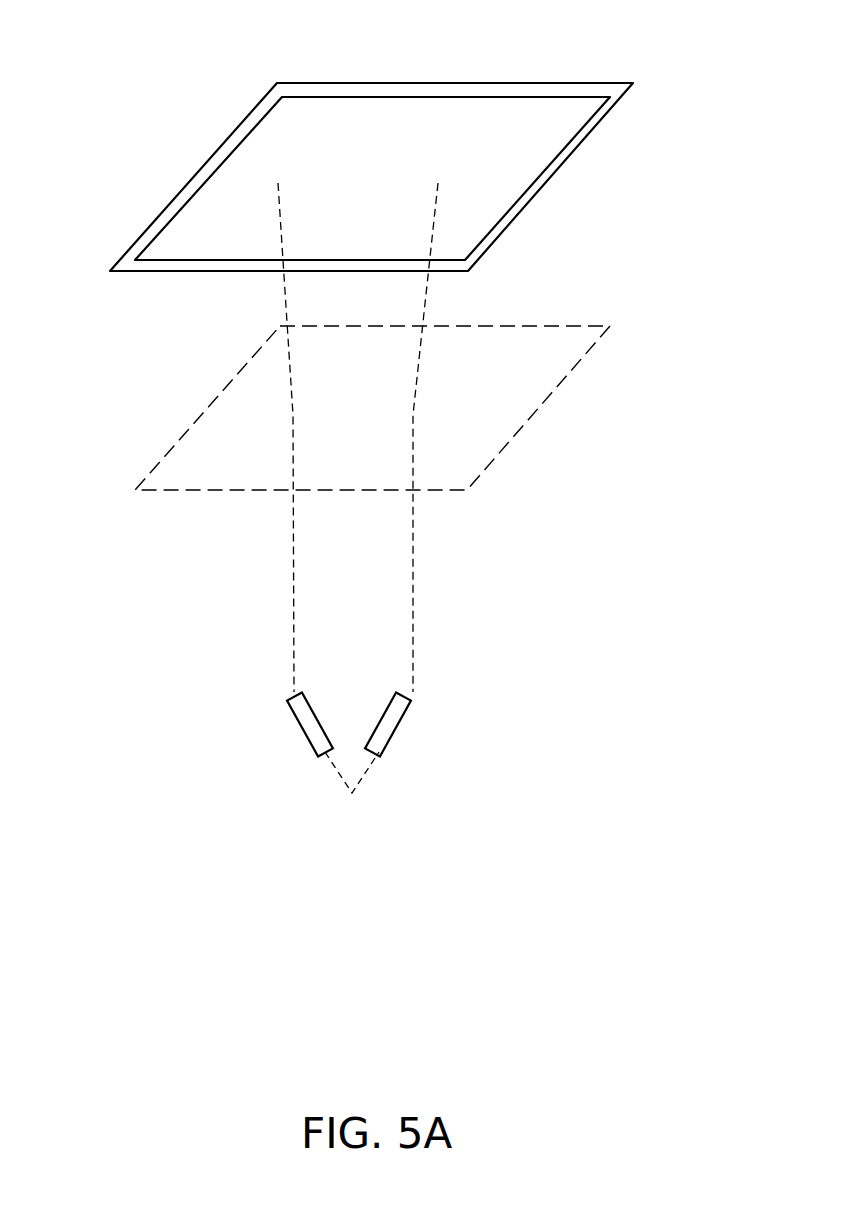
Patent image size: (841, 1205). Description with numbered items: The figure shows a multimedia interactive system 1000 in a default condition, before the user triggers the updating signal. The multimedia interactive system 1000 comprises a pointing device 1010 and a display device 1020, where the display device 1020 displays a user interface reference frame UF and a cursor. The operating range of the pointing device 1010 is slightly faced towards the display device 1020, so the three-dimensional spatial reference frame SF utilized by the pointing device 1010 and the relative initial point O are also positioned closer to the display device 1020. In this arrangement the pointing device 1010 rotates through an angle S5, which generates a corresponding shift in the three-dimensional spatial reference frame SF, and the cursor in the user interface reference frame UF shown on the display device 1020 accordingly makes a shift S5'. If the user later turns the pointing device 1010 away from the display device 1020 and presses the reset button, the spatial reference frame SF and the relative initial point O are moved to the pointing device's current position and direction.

The multimedia interactive system 1000 is at (112, 87).
The display device 1020 is at (633, 82).
The pointing device 1010 is at (302, 732).
The user interface reference frame UF is at (543, 173).
The 3D spatial reference frame SF is at (540, 407).
The relative initial point O is at (133, 495).
The angle S5 is at (351, 690).
The shift S5' is at (358, 158).